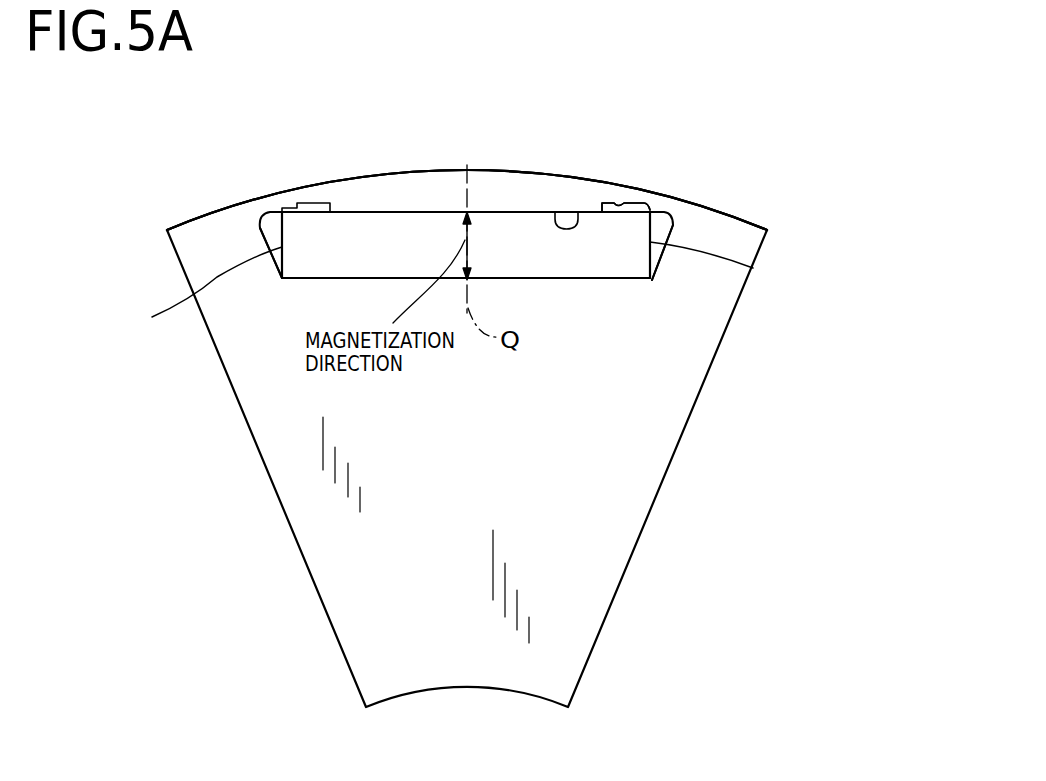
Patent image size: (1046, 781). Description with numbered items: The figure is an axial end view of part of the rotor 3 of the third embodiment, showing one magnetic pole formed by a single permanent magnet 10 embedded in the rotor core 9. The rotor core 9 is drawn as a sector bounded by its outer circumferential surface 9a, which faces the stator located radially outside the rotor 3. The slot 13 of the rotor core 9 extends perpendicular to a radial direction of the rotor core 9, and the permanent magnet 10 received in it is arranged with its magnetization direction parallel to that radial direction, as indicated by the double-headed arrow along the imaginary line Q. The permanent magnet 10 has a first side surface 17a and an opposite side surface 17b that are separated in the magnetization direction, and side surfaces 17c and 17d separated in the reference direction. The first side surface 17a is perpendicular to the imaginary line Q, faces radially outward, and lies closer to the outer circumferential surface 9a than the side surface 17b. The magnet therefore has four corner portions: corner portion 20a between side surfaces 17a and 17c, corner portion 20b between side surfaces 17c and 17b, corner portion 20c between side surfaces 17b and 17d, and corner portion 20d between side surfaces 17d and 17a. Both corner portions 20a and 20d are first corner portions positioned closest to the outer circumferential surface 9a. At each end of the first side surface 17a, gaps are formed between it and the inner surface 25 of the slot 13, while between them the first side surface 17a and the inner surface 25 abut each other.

The rotor 3 is at (815, 192).
The rotor core 9 is at (610, 558).
The outer circumferential surface 9a is at (743, 217).
The permanent magnet 10 is at (520, 232).
The slot 13 is at (578, 212).
The inner surface 25 is at (622, 205).
The first side surface 17a is at (360, 212).
The side surface 17b is at (600, 280).
The side surface 17c is at (195, 289).
The side surface 17d is at (753, 268).
The corner portion 20a is at (280, 209).
The corner portion 20b is at (283, 278).
The corner portion 20c is at (650, 282).
The corner portion 20d is at (653, 213).